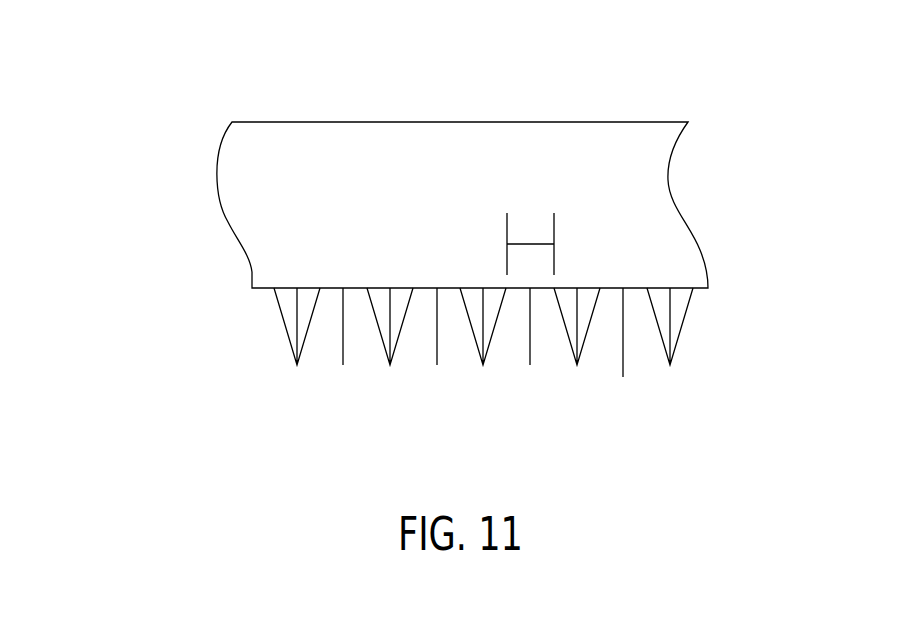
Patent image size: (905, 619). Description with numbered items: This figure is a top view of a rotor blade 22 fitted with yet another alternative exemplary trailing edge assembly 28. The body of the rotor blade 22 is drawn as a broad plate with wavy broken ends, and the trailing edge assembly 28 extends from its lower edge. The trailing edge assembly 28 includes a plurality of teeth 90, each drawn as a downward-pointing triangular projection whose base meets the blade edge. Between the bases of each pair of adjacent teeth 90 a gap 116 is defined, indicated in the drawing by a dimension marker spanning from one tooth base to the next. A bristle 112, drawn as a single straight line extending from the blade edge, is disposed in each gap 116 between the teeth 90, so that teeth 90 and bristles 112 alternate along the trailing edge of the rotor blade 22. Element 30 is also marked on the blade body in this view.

The rotor blade 22 is at (206, 85).
The substrate 30 is at (452, 140).
The trailing edge assembly 28 is at (255, 324).
The tooth 90 is at (685, 318).
The bristle 112 is at (623, 377).
The gap 116 is at (530, 243).